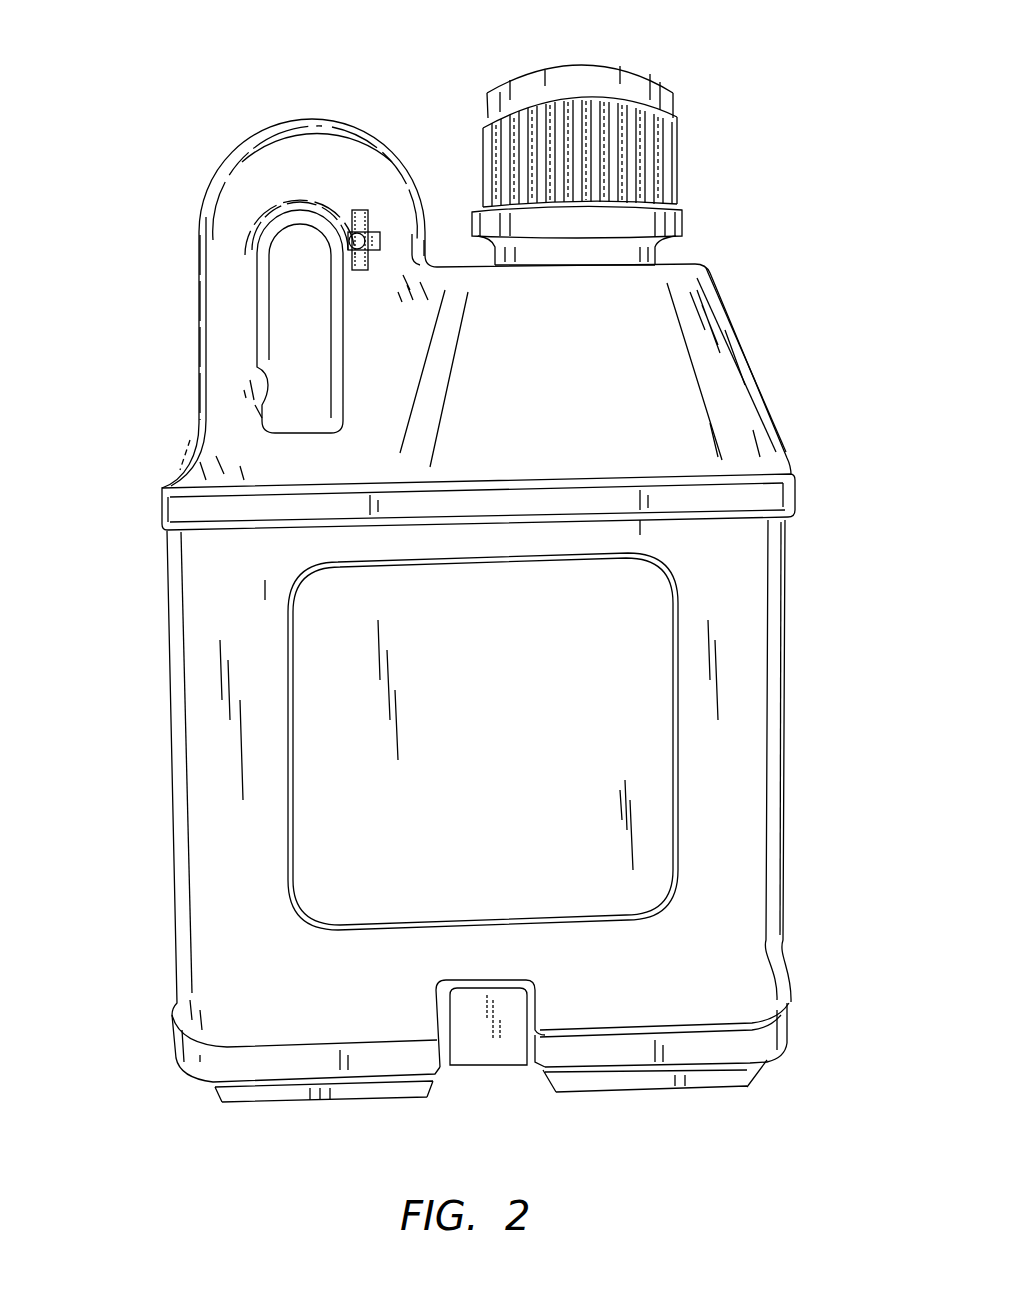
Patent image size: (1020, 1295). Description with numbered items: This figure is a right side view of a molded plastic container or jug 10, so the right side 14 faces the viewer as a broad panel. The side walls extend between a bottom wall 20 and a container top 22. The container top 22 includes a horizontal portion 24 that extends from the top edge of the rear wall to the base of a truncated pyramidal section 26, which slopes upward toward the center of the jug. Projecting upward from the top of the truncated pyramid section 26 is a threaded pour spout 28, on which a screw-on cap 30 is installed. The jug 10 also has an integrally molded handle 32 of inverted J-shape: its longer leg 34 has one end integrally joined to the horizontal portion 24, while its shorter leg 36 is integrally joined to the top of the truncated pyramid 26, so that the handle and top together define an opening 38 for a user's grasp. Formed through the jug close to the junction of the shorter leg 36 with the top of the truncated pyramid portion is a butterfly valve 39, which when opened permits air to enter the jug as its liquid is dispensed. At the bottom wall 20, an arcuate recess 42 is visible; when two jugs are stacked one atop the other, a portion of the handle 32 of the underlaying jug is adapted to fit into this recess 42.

The molded plastic container 10 is at (478, 574).
The right side 14 is at (468, 688).
The bottom wall 20 is at (276, 1102).
The container top 22 is at (738, 325).
The horizontal portion 24 is at (238, 452).
The truncated pyramidal section 26 is at (725, 408).
The threaded pour spout 28 is at (660, 250).
The screw-on cap 30 is at (637, 73).
The integrally molded handle 32 is at (278, 128).
The longer leg 34 is at (198, 233).
The shorter leg 36 is at (422, 177).
The opening 38 is at (296, 297).
The butterfly valve 39 is at (356, 210).
The arcuate recess 42 is at (496, 1070).